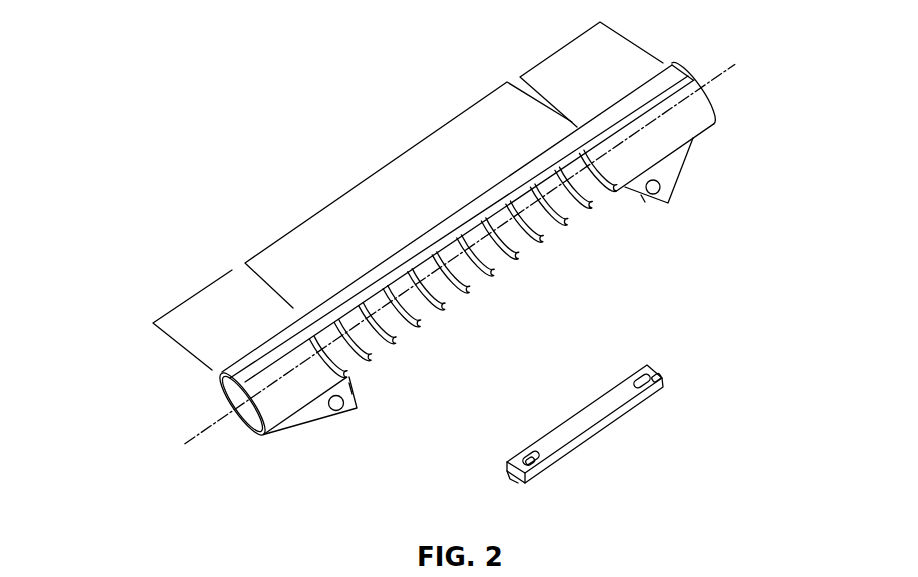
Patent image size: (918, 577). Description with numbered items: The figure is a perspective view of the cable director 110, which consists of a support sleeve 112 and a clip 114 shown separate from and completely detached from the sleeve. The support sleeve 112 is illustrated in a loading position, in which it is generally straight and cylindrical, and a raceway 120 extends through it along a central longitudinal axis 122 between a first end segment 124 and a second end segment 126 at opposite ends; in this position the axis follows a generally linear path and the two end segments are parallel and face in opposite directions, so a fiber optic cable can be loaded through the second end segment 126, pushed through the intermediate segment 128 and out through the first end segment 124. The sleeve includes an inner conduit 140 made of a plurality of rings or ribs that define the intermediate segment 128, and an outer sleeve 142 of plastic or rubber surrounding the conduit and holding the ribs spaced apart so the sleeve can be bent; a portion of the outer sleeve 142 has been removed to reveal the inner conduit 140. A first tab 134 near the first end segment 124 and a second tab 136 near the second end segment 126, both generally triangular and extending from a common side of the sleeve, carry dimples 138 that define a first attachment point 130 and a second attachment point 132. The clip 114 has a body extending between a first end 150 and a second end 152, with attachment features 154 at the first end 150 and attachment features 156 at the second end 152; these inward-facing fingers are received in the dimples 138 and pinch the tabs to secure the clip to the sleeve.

The cable director 110 is at (455, 264).
The support sleeve 112 is at (471, 245).
The clip 114 is at (578, 411).
The raceway 120 is at (245, 417).
The central longitudinal axis 122 is at (733, 70).
The first end segment 124 is at (197, 291).
The second end segment 126 is at (565, 47).
The intermediate segment 128 is at (381, 166).
The first attachment point 130 is at (338, 411).
The second attachment point 132 is at (661, 194).
The first tab 134 is at (307, 417).
The second tab 136 is at (678, 165).
The dimples 138 is at (352, 394).
The inner conduit 140 is at (483, 273).
The outer sleeve 142 is at (445, 312).
The first end 150 is at (512, 477).
The second end 152 is at (658, 377).
The attachment features 154 is at (503, 482).
The attachment features 156 is at (663, 369).